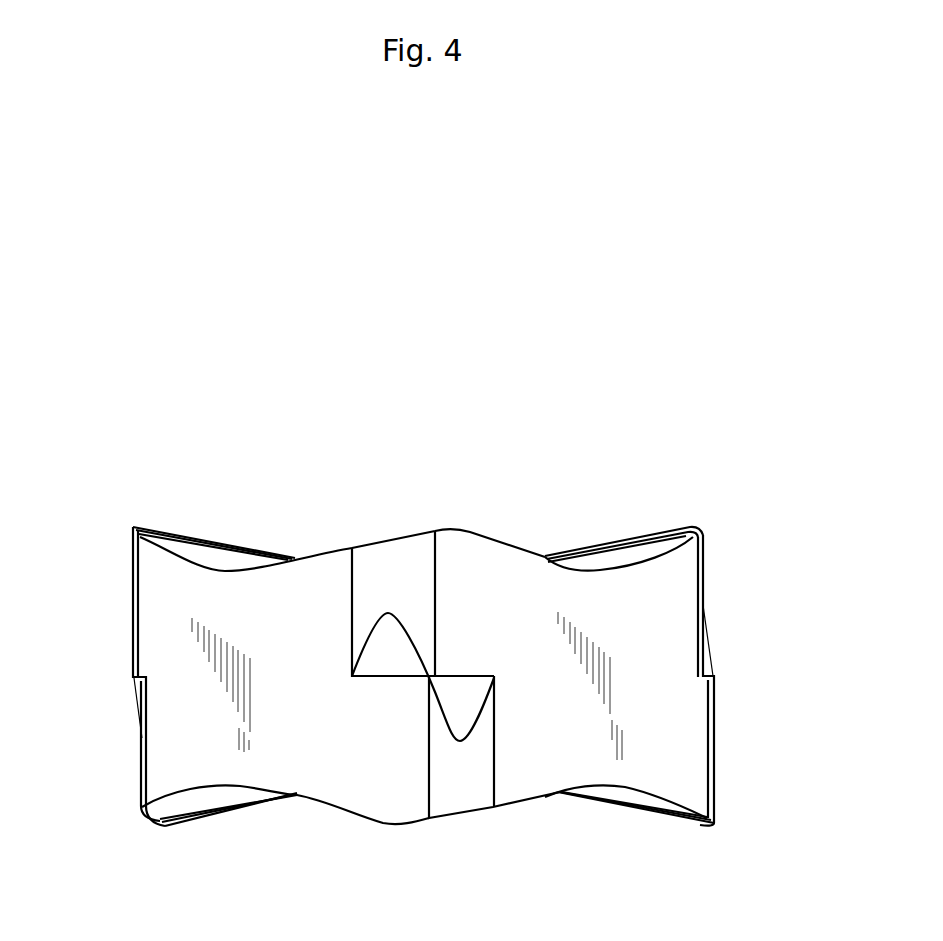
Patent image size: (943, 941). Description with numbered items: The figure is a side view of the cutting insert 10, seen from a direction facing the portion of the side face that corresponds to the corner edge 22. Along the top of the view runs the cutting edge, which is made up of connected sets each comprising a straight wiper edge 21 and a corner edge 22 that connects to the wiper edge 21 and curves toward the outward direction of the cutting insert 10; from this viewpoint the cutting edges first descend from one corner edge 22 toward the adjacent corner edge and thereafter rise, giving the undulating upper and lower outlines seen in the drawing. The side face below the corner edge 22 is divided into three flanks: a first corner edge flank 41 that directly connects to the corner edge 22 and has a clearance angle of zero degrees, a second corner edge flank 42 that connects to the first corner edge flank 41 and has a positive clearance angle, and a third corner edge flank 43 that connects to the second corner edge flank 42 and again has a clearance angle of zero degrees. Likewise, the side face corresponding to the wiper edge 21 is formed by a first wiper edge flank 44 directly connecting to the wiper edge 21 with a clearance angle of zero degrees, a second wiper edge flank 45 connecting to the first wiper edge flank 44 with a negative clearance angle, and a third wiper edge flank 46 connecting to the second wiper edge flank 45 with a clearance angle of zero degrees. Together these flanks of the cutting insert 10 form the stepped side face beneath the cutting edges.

The cutting insert 10 is at (413, 917).
The wiper edge 21 is at (392, 538).
The corner edge 22 is at (460, 528).
The first corner edge flank 41 is at (460, 595).
The second corner edge flank 42 is at (463, 710).
The third corner edge flank 43 is at (467, 768).
The first wiper edge flank 44 is at (383, 590).
The second wiper edge flank 45 is at (382, 653).
The third wiper edge flank 46 is at (393, 760).